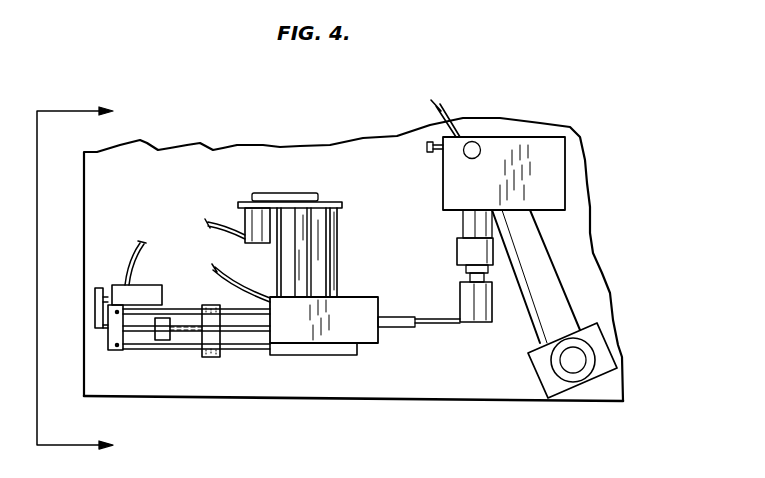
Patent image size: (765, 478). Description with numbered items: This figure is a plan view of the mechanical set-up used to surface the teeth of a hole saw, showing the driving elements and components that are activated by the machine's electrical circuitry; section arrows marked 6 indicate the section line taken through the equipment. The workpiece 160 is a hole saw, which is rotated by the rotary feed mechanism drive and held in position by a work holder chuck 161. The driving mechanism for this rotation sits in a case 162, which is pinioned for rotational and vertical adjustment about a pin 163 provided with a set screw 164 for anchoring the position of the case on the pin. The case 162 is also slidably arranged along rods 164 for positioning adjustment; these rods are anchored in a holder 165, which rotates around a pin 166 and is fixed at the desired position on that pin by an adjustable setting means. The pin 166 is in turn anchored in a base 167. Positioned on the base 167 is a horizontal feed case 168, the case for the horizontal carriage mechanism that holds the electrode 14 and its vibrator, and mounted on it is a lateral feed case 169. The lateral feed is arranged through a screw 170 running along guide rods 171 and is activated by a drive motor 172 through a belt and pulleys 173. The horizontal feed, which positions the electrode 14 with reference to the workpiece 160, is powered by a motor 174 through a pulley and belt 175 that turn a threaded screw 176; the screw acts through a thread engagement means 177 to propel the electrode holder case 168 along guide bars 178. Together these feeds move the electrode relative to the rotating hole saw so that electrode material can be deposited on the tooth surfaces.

The section line for FIG. 6 is at (83, 282).
The electrode 14 is at (446, 323).
The workpiece 160 is at (483, 323).
The work holder chuck 161 is at (455, 249).
The case 162 is at (443, 181).
The pin 163 is at (476, 141).
The rods 164 is at (428, 142).
The holder 165 is at (607, 334).
The pin 166 is at (560, 367).
The base 167 is at (505, 401).
The horizontal feed case 168 is at (380, 305).
The lateral feed case 169 is at (353, 357).
The screw 170 is at (312, 248).
The guide rods 171 is at (337, 284).
The drive motor 172 is at (247, 218).
The belt and pulleys 173 is at (278, 193).
The motor 174 is at (147, 285).
The pulley and belt 175 is at (96, 297).
The threaded screw 176 is at (142, 332).
The thread engagement means 177 is at (168, 341).
The guide bars 178 is at (256, 349).